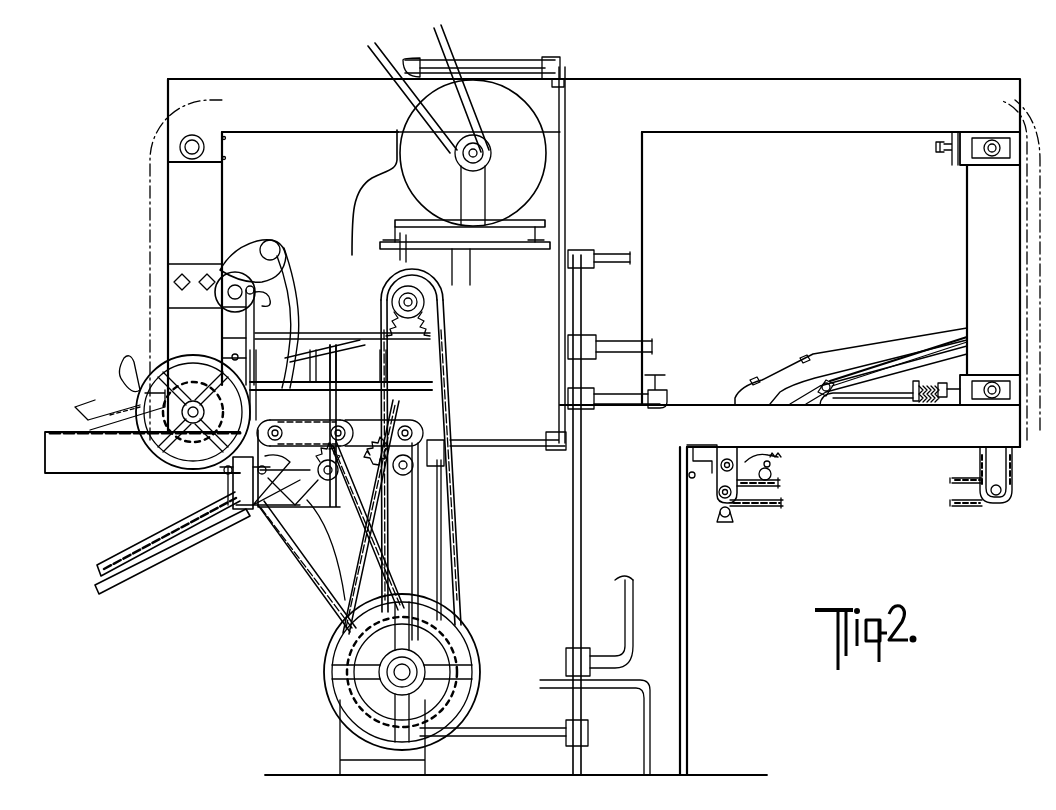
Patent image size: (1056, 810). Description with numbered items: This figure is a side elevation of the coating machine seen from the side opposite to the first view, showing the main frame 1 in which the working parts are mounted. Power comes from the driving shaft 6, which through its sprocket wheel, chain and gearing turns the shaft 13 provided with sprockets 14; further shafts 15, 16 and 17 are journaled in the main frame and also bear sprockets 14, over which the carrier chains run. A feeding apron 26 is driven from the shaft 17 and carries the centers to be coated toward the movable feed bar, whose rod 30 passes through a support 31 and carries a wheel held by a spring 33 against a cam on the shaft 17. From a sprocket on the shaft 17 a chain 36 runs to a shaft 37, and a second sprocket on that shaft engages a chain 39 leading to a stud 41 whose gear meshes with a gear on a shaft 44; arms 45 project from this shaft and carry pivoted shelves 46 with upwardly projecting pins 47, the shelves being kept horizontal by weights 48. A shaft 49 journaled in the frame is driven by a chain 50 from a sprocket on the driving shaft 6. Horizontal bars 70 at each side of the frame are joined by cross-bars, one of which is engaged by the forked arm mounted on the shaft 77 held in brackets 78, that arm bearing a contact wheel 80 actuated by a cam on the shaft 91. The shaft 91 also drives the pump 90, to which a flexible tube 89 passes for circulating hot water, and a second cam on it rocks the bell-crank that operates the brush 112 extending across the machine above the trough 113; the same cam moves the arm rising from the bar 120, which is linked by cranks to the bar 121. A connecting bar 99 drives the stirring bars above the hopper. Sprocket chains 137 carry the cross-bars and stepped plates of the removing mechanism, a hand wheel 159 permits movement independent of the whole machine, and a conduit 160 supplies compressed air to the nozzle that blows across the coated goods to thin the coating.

The main frame 1 is at (543, 512).
The driving shaft 6 is at (410, 665).
The shaft 13 is at (188, 372).
The sprockets 14 is at (226, 158).
The shaft 15 is at (192, 159).
The shaft 16 is at (992, 156).
The shaft 17 is at (992, 382).
The feeding apron 26 is at (880, 375).
The rod 30 is at (882, 397).
The support 31 is at (916, 401).
The spring 33 is at (942, 398).
The chain 36 is at (1012, 470).
The shaft 37 is at (1012, 490).
The chain 39 is at (952, 480).
The stud 41 is at (712, 498).
The shaft 44 is at (729, 458).
The arms 45 is at (778, 462).
The shelves 46 is at (770, 478).
The pins 47 is at (690, 460).
The weights 48 is at (727, 518).
The shaft 49 is at (424, 308).
The chain 50 is at (448, 412).
The horizontal bars 70 is at (308, 420).
The shaft 77 is at (270, 240).
The brackets 78 is at (197, 276).
The contact wheel 80 is at (252, 335).
The flexible tube 89 is at (312, 333).
The pump 90 is at (236, 485).
The shaft 91 is at (232, 273).
The connecting bar 99 is at (298, 292).
The brush 112 is at (140, 350).
The trough 113 is at (88, 392).
The bar 120 is at (347, 420).
The bar 121 is at (345, 333).
The sprocket chains 137 is at (142, 440).
The hand wheel 159 is at (150, 452).
The conduit 160 is at (350, 258).